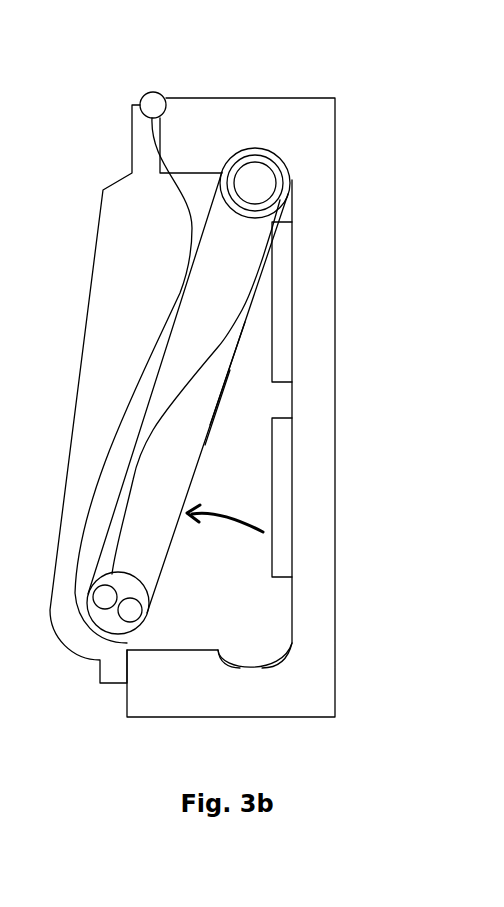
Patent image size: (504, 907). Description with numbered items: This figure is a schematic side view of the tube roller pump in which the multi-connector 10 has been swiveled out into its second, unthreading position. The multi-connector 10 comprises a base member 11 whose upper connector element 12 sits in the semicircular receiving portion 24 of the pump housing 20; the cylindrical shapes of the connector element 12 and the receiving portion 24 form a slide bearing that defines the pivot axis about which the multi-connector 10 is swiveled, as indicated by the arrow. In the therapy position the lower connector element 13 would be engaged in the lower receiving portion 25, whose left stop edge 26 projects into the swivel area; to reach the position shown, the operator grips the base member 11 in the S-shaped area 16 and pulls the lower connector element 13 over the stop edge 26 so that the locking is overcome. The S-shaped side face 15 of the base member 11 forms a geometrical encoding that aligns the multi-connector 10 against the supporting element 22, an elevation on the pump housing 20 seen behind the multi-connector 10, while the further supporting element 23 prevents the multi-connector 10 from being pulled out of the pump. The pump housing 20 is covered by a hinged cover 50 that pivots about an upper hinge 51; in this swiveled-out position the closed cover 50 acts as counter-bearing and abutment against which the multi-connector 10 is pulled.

The multi-connector 10 is at (178, 555).
The base member 11 is at (173, 478).
The upper connector element 12 is at (253, 197).
The lower connector element 13 is at (143, 620).
The side face 15 is at (222, 398).
The S-shaped area 16 is at (220, 350).
The pump housing 20 is at (243, 102).
The supporting element 22 is at (285, 292).
The supporting element 23 is at (285, 507).
The semicircular receiving portion 24 is at (267, 152).
The receiving portion 25 is at (283, 657).
The stop edge 26 is at (218, 651).
The hinged cover 50 is at (108, 277).
The upper hinge 51 is at (153, 100).